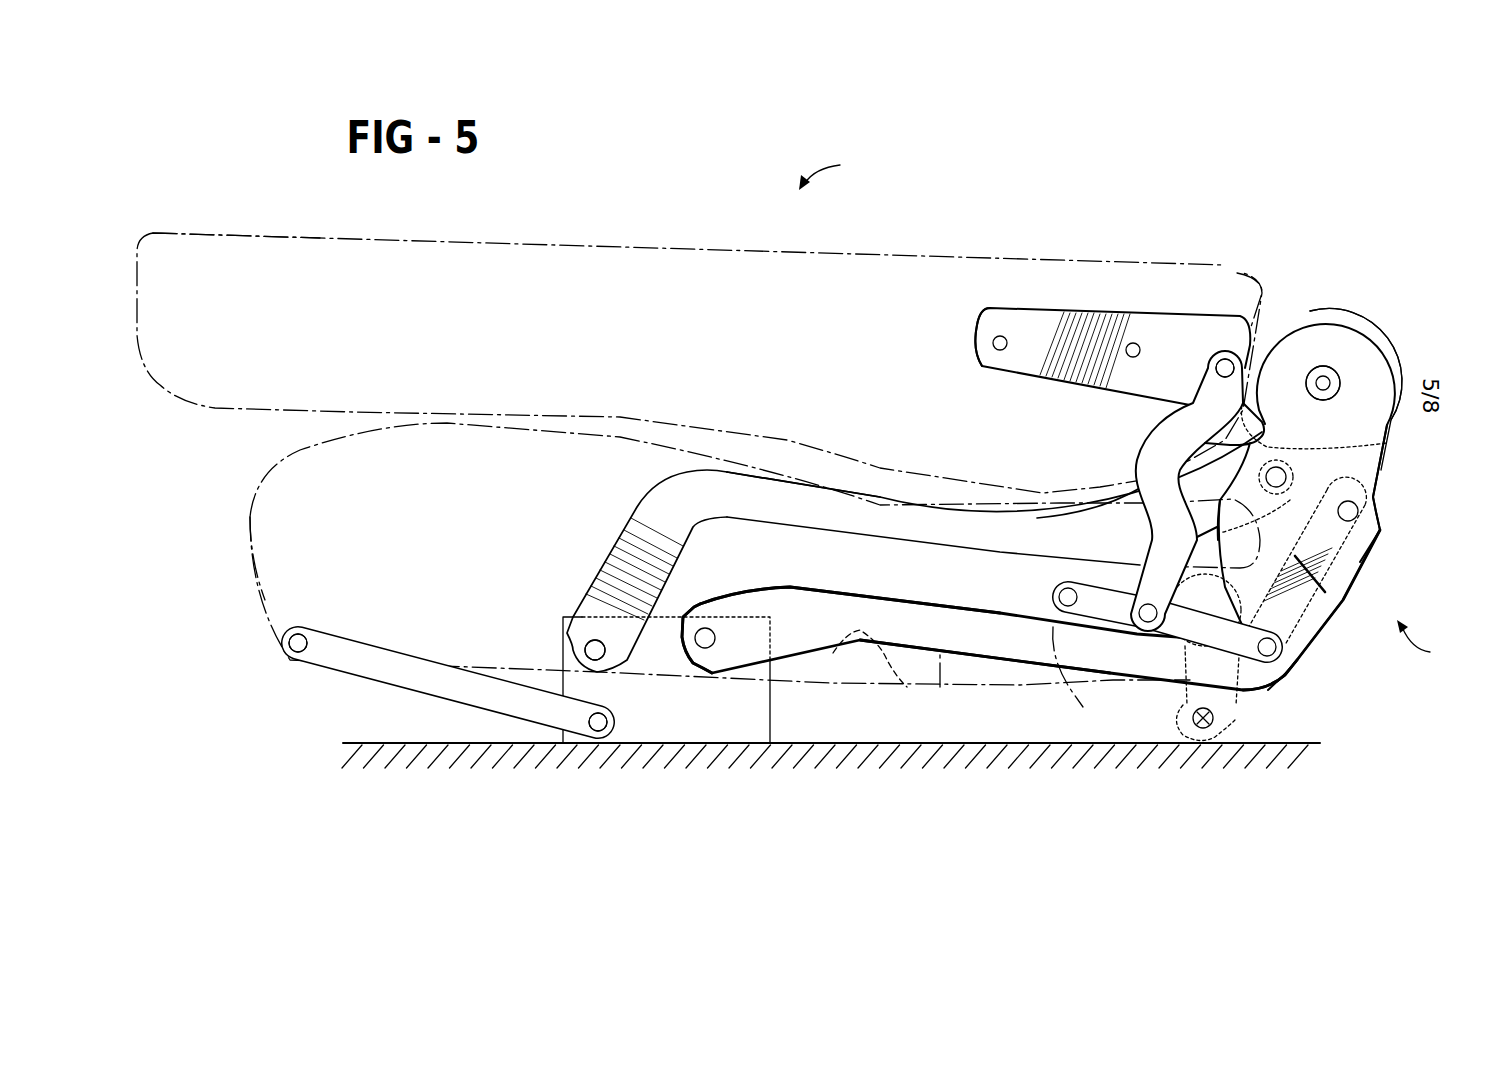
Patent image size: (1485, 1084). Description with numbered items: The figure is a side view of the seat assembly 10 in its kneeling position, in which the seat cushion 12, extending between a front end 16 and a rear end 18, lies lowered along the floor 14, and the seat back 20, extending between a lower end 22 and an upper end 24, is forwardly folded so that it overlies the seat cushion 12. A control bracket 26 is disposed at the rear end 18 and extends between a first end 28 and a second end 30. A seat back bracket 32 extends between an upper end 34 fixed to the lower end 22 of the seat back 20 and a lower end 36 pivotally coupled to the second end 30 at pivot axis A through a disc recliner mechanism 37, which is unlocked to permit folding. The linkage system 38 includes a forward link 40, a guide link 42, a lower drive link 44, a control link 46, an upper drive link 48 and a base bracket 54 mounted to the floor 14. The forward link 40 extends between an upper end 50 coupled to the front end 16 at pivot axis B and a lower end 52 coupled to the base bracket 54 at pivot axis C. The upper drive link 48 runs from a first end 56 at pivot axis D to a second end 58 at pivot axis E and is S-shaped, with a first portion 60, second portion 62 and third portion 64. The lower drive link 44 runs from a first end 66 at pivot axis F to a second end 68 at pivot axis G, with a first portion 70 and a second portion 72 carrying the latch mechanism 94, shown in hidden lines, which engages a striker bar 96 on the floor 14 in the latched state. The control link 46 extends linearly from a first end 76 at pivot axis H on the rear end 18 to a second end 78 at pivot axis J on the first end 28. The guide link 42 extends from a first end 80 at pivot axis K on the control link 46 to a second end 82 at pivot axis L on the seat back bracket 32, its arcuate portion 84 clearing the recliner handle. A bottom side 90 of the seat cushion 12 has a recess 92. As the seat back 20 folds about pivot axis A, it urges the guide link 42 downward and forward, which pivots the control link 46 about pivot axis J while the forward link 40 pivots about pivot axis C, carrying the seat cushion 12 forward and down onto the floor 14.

The seat assembly 10 is at (835, 169).
The seat cushion 12 is at (277, 463).
The floor 14 is at (375, 740).
The front end 16 is at (250, 545).
The rear end 18 is at (1343, 607).
The seat back 20 is at (612, 235).
The lower end 22 is at (1237, 273).
The upper end 24 is at (172, 240).
The control bracket 26 is at (1363, 465).
The first end 28 is at (1290, 680).
The second end 30 is at (1353, 333).
The seat back bracket 32 is at (1175, 318).
The upper end 34 is at (988, 325).
The lower end 36 is at (1375, 457).
The disc recliner mechanism 37 is at (1343, 387).
The linkage system 38 is at (1378, 631).
The forward link 40 is at (463, 710).
The guide link 42 is at (1143, 455).
The lower drive link 44 is at (927, 650).
The control link 46 is at (1223, 663).
The upper drive link 48 is at (913, 540).
The upper end 50 is at (307, 620).
The lower end 52 is at (613, 732).
The base bracket 54 is at (753, 723).
The first end 56 is at (617, 650).
The second end 58 is at (1283, 493).
The first portion 60 is at (650, 517).
The second portion 62 is at (827, 520).
The third portion 64 is at (1120, 517).
The first end 66 is at (720, 665).
The second end 68 is at (1373, 530).
The first portion 70 is at (760, 597).
The second portion 72 is at (972, 637).
The first end 76 is at (1050, 595).
The second end 78 is at (1287, 640).
The first end 80 is at (1112, 585).
The second end 82 is at (1213, 368).
The arcuate portion 84 is at (1150, 467).
The bottom side 90 is at (940, 687).
The recess 92 is at (833, 670).
The latch mechanism 94 is at (1240, 723).
The striker bar 96 is at (1200, 715).
The pivot axis A is at (1325, 380).
The pivot axis B is at (298, 655).
The pivot axis C is at (598, 735).
The pivot axis D is at (595, 640).
The pivot axis E is at (1277, 477).
The pivot axis F is at (703, 627).
The pivot axis G is at (1355, 510).
The pivot axis H is at (1076, 674).
The pivot axis J is at (1300, 672).
The pivot axis K is at (1142, 657).
The pivot axis L is at (1222, 367).